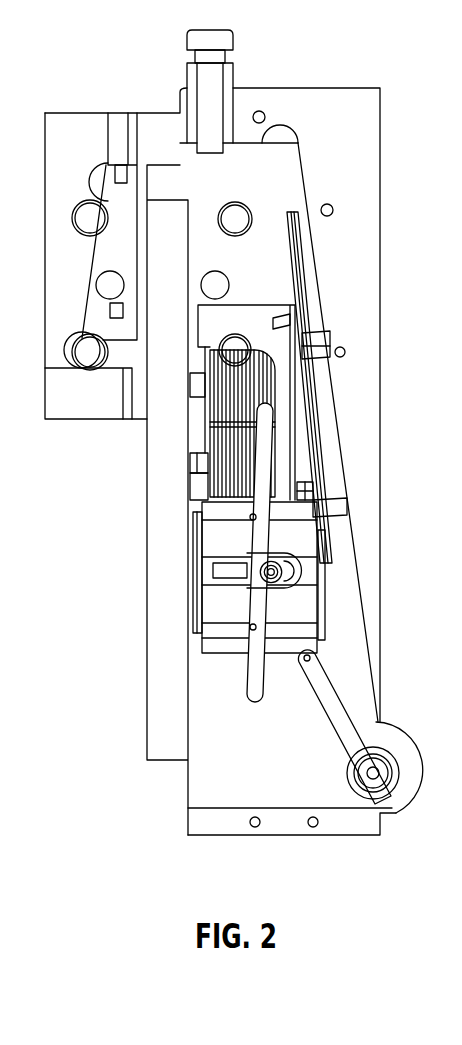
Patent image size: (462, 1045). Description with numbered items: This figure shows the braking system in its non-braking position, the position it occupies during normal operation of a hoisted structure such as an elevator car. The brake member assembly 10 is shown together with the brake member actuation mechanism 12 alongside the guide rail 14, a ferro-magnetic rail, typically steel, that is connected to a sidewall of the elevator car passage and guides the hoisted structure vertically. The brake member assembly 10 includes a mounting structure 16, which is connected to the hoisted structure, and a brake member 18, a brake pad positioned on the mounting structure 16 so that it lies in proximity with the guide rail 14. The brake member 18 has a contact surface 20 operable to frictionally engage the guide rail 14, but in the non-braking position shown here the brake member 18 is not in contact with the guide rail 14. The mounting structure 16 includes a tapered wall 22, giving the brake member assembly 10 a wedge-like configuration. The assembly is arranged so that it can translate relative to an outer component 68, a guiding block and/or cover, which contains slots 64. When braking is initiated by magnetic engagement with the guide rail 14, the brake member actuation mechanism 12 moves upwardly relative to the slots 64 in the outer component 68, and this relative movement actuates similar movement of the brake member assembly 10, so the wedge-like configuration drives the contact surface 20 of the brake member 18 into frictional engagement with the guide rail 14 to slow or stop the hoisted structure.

The brake member assembly 10 is at (278, 291).
The brake member actuation mechanism 12 is at (316, 548).
The guide rail 14 is at (157, 677).
The mounting structure 16 is at (238, 313).
The brake member 18 is at (195, 490).
The contact surface 20 is at (190, 462).
The tapered wall 22 is at (307, 388).
The slots 64 is at (253, 701).
The outer component 68 is at (241, 782).